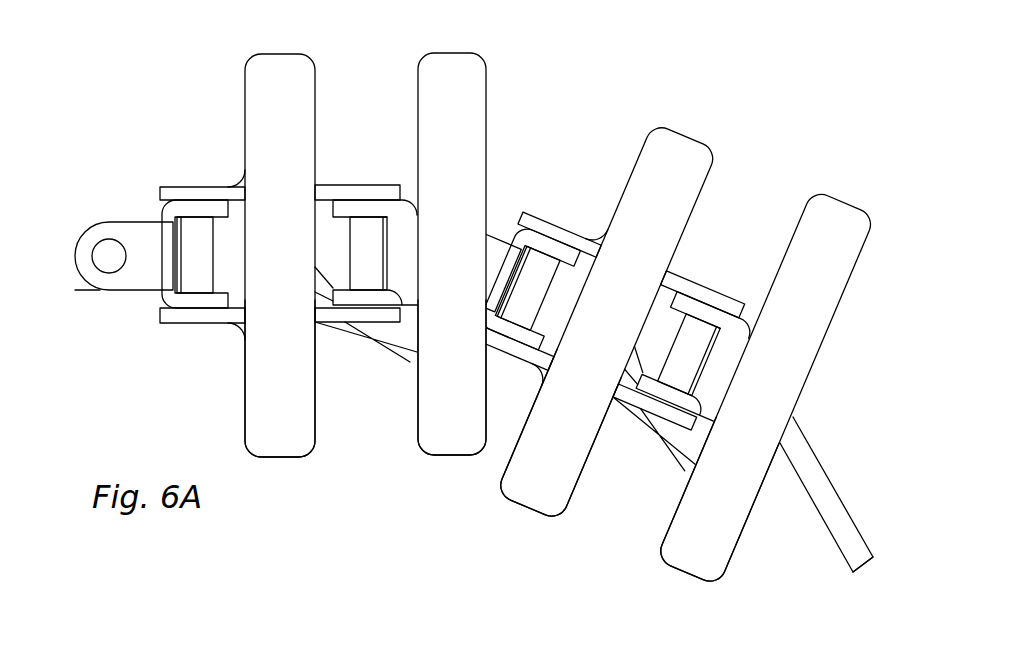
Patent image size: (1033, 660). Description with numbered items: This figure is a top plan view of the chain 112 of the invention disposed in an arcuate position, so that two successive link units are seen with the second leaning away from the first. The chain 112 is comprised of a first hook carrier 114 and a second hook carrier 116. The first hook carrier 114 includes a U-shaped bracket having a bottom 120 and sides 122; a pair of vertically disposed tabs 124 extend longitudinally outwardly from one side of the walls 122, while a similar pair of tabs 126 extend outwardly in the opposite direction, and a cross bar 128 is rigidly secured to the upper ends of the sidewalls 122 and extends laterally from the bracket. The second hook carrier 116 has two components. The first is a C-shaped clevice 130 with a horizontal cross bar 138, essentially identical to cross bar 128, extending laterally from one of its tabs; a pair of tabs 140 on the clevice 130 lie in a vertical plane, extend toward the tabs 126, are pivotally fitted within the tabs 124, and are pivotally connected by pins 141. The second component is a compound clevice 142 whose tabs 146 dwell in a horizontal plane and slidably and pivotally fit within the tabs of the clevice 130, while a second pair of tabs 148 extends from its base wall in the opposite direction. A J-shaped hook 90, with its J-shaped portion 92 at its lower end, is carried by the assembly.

The J-shaped hook 90 is at (396, 360).
The J-shaped portion 92 is at (412, 362).
The chain 112 is at (735, 83).
The first hook carrier 114 is at (245, 110).
The second hook carrier 116 is at (503, 117).
The bottom 120 is at (250, 252).
The sides 122 is at (232, 186).
The tabs 124 is at (166, 190).
The tabs 126 is at (347, 195).
The cross bar 128 is at (250, 417).
The C-shaped clevice 130 is at (418, 455).
The horizontal cross bar 138 is at (443, 442).
The tabs 140 is at (370, 298).
The pins 141 is at (378, 243).
The compound clevice 142 is at (100, 292).
The tabs 146 is at (100, 222).
The tabs 148 is at (200, 210).